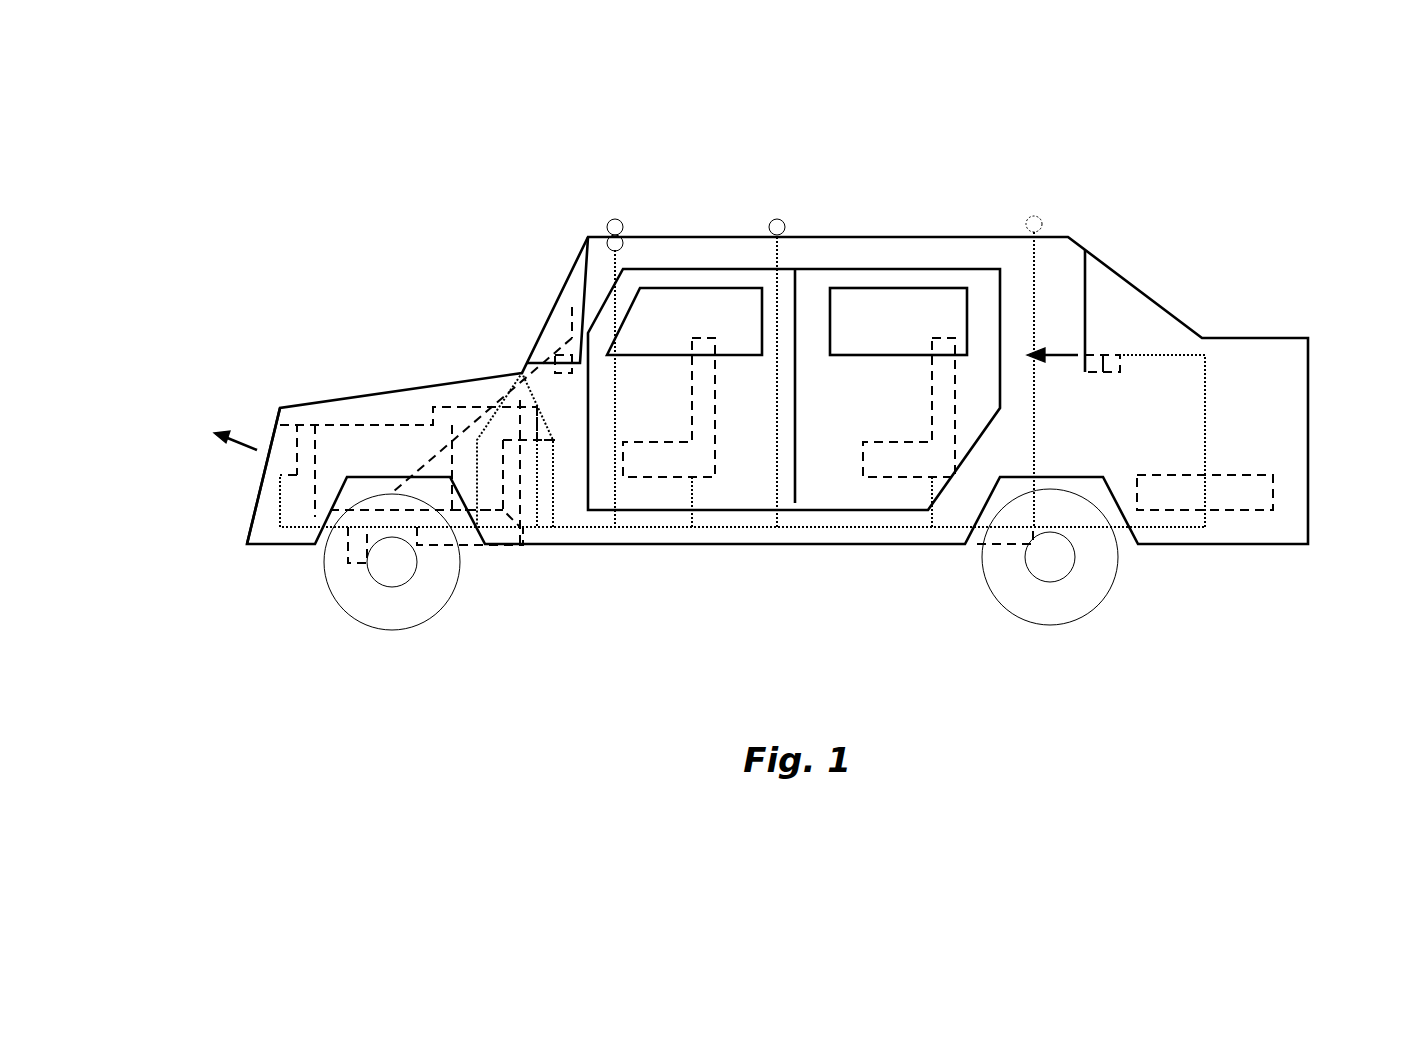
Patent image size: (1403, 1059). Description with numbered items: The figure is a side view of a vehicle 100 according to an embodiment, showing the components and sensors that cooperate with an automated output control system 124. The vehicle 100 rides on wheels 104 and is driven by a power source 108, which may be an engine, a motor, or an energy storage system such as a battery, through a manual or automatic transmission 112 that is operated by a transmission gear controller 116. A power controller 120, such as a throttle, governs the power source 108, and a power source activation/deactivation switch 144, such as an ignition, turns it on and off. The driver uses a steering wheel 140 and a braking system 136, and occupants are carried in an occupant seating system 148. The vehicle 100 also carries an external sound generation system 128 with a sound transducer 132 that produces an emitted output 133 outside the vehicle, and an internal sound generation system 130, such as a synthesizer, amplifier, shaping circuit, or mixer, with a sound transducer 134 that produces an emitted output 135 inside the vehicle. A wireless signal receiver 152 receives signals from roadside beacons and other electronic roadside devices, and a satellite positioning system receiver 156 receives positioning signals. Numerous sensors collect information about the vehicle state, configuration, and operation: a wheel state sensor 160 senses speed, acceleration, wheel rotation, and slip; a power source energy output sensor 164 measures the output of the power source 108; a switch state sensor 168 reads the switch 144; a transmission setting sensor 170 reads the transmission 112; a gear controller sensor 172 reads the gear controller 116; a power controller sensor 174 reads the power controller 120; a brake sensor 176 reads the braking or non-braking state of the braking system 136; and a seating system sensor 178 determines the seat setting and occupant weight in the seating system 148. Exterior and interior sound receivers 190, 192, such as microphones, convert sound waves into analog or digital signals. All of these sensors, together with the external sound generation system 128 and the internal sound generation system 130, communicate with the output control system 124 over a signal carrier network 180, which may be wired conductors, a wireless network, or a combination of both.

The vehicle 100 is at (828, 151).
The wheels 104 is at (383, 578).
The power source 108 is at (337, 427).
The transmission 112 is at (356, 440).
The transmission gear controller 116 is at (478, 433).
The power controller 120 is at (560, 356).
The automated output control system 124 is at (1232, 478).
The external sound generation system 128 is at (290, 430).
The internal sound generation system 130 is at (1112, 360).
The sound transducer 132 is at (268, 465).
The emitted output 133 is at (232, 430).
The sound transducer 134 is at (1090, 345).
The emitted output 135 is at (1040, 345).
The braking system 136 is at (360, 562).
The steering wheel 140 is at (623, 265).
The power source activation/deactivation switch 144 is at (562, 355).
The occupant seating system 148 is at (698, 348).
The wireless signal receiver 152 is at (773, 220).
The satellite positioning system receiver 156 is at (1038, 218).
The wheel state sensor 160 is at (360, 547).
The power source energy output sensor 164 is at (282, 502).
The switch state sensor 168 is at (468, 542).
The transmission setting sensor 170 is at (510, 545).
The gear controller sensor 172 is at (543, 500).
The power controller sensor 174 is at (617, 420).
The brake sensor 176 is at (1038, 497).
The seating system sensor 178 is at (690, 528).
The signal carrier network 180 is at (760, 305).
The exterior sound receiver 190 is at (610, 220).
The interior sound receiver 192 is at (606, 242).